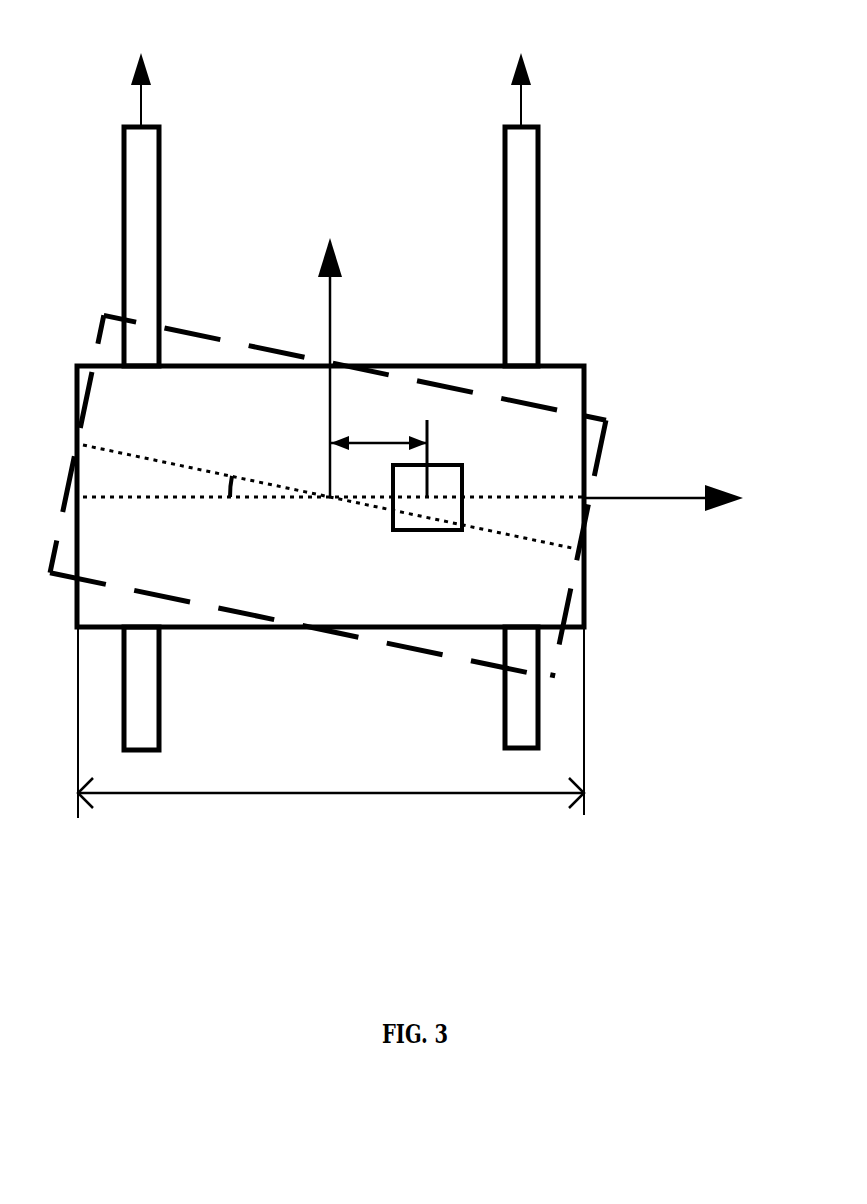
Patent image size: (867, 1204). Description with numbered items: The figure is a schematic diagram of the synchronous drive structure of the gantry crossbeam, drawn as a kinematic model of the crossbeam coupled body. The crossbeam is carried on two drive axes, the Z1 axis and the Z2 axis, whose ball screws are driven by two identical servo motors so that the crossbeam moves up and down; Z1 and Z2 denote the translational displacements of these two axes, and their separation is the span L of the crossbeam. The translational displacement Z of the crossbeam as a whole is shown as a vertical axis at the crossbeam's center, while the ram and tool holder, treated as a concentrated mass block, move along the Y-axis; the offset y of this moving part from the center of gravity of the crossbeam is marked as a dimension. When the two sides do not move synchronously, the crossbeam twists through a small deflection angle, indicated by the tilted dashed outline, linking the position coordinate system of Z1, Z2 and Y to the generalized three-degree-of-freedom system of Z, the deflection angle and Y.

The Z1 axis Z1 is at (142, 193).
The Z2 axis Z2 is at (524, 193).
The translational displacement of the crossbeam Z is at (329, 346).
The Y-axis Y is at (679, 496).
The displacement of the moving part from the center of gravity of the crossbeam y is at (396, 466).
The span of the crossbeam L is at (331, 722).